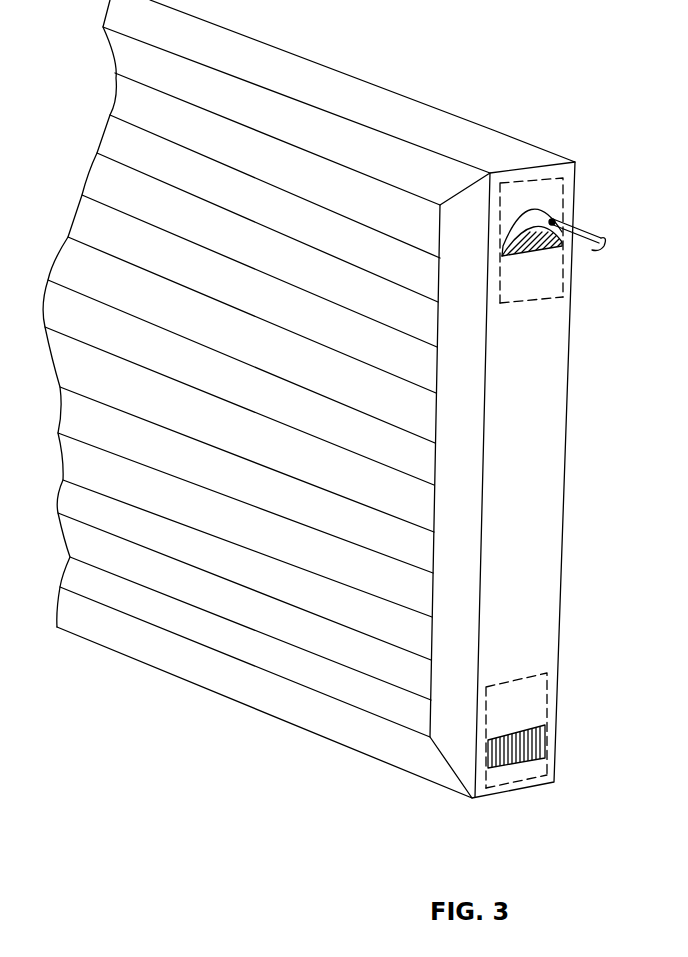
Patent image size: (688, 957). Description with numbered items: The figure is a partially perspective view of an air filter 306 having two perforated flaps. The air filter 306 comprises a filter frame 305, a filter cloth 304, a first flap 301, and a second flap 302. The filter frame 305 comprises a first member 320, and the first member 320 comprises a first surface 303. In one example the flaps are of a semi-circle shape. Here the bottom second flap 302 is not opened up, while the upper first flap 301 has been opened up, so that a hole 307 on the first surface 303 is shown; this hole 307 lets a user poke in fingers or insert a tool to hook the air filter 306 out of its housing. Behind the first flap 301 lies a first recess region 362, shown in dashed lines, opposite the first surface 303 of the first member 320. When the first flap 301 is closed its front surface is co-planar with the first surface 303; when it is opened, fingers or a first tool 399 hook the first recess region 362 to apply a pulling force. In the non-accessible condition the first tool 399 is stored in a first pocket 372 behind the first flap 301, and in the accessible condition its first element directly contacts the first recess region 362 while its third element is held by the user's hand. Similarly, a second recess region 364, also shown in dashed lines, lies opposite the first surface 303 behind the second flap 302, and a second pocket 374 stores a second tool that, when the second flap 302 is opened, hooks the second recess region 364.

The air filter 306 is at (473, 82).
The first recess region 362 is at (548, 191).
The hole 307 is at (537, 218).
The first tool 399 is at (594, 242).
The first flap 301 is at (533, 240).
The first pocket 372 is at (533, 283).
The first surface 303 is at (540, 522).
The first member 320 is at (538, 613).
The second pocket 374 is at (522, 695).
The second flap 302 is at (522, 755).
The second recess region 364 is at (538, 768).
The filter cloth 304 is at (175, 613).
The filter frame 305 is at (260, 697).